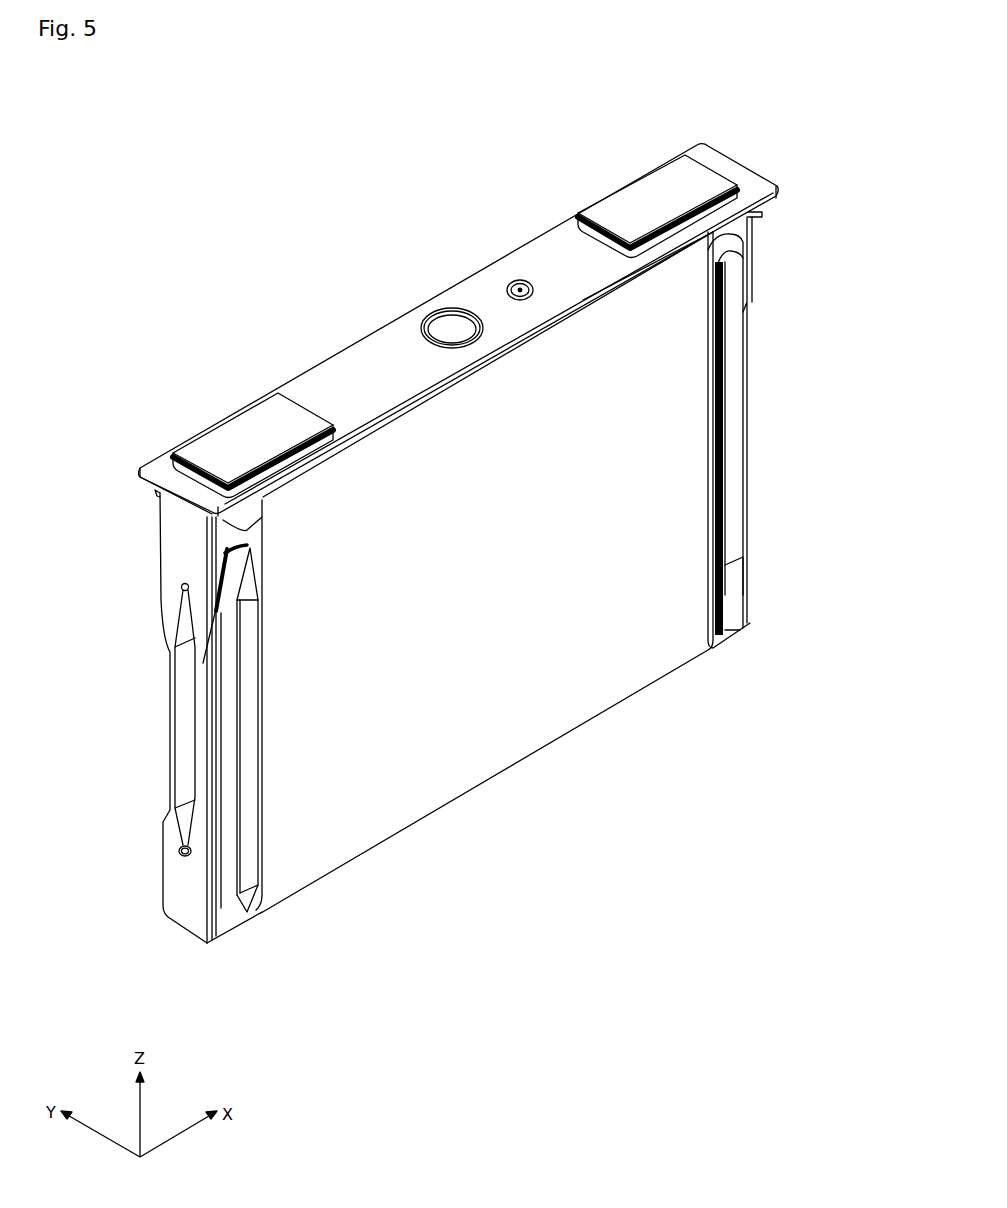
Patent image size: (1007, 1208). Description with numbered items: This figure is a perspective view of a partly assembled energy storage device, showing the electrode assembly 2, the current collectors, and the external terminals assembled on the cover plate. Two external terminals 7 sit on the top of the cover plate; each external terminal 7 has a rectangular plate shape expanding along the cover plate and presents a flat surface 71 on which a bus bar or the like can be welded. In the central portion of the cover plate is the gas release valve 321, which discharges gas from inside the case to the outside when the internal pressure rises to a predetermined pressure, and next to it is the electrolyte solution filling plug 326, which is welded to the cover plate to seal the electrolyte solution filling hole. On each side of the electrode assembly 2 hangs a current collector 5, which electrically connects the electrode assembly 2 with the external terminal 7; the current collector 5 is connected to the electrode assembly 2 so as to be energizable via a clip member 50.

The electrode assembly 2 is at (528, 758).
The current collector 5 is at (158, 541).
The external terminal 7 is at (210, 421).
The clip member 50 is at (228, 762).
The surface 71 is at (258, 423).
The gas release valve 321 is at (430, 313).
The electrolyte solution filling plug 326 is at (510, 282).